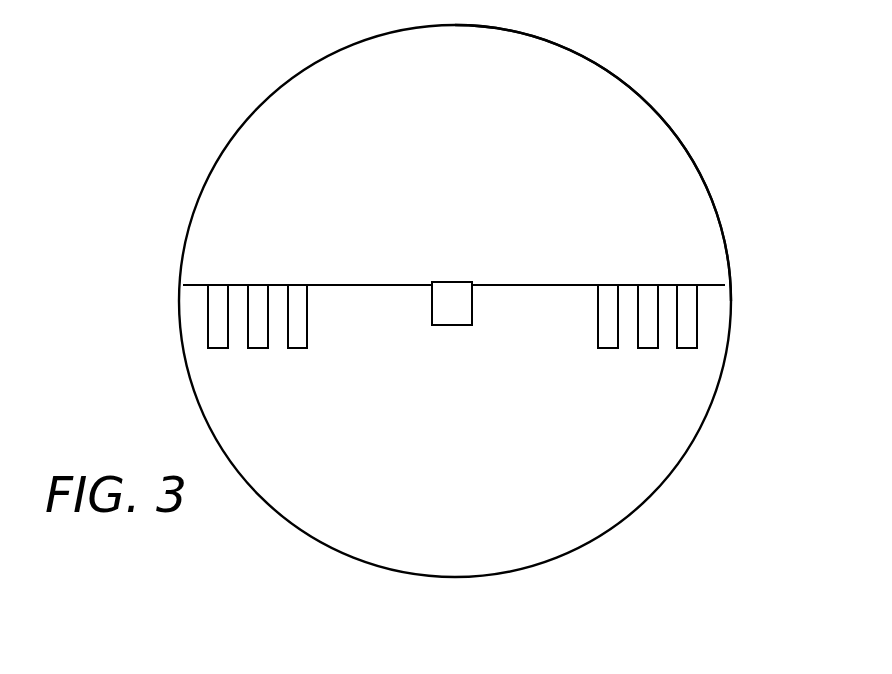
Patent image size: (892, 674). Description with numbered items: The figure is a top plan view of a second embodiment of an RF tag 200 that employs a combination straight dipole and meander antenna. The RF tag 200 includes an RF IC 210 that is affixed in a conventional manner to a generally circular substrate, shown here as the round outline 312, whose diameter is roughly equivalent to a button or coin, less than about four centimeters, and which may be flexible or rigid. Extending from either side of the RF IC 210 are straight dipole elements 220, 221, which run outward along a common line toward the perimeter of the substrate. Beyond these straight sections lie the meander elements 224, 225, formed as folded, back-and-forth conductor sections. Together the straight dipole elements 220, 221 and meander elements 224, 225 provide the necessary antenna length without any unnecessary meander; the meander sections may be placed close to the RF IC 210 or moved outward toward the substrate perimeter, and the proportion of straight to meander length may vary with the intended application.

The RF tag 200 is at (181, 99).
The circular substrate 312 is at (685, 440).
The straight dipole element 221 is at (348, 283).
The straight dipole element 220 is at (561, 283).
The meander element 225 is at (258, 348).
The meander element 224 is at (611, 348).
The RF IC 210 is at (453, 325).